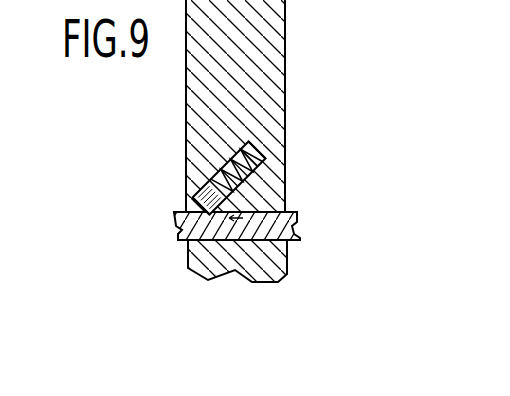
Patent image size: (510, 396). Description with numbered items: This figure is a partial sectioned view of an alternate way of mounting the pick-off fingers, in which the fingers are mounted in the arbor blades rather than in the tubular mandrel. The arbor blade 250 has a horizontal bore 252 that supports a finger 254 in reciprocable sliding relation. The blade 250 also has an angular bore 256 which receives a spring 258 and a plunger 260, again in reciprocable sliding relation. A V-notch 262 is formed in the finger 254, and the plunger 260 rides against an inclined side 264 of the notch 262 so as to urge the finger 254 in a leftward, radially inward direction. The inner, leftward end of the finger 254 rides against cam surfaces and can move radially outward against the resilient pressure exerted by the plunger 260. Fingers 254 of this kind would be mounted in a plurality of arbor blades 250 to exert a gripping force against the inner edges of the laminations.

The arbor blade 250 is at (267, 20).
The horizontal bore 252 is at (208, 243).
The finger 254 is at (253, 243).
The angular bore 256 is at (226, 165).
The spring 258 is at (268, 160).
The plunger 260 is at (195, 200).
The V-notch 262 is at (322, 200).
The inclined side 264 is at (195, 214).